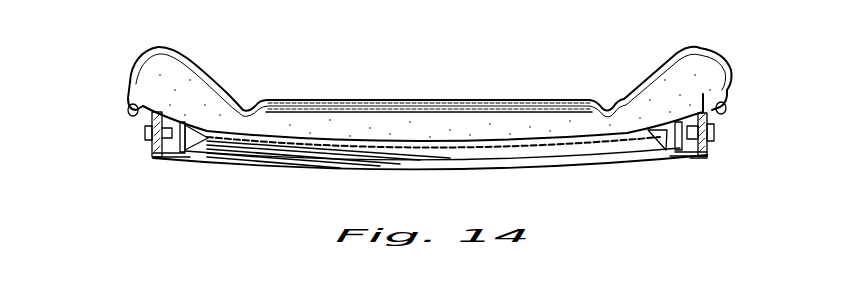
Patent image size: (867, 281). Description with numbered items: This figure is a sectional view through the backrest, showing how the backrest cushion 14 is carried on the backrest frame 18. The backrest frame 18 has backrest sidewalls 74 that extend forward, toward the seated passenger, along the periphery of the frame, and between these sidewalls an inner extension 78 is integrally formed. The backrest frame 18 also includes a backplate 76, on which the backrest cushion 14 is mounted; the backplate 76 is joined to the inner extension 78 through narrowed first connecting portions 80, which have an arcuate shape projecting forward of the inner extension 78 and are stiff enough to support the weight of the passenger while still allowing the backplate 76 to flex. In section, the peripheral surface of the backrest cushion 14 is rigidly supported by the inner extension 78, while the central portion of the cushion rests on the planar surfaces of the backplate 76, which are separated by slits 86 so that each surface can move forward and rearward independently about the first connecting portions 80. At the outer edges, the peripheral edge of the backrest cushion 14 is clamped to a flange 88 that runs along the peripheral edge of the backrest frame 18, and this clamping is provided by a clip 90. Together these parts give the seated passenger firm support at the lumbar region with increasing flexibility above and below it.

The backrest cushion 14 is at (458, 102).
The backrest frame 18 is at (597, 163).
The backrest sidewalls 74 is at (150, 113).
The backplate 76 is at (370, 142).
The inner extension 78 is at (705, 156).
The first connecting portions 80 is at (213, 163).
The slits 86 is at (650, 140).
The flange 88 is at (128, 84).
The clip 90 is at (128, 109).